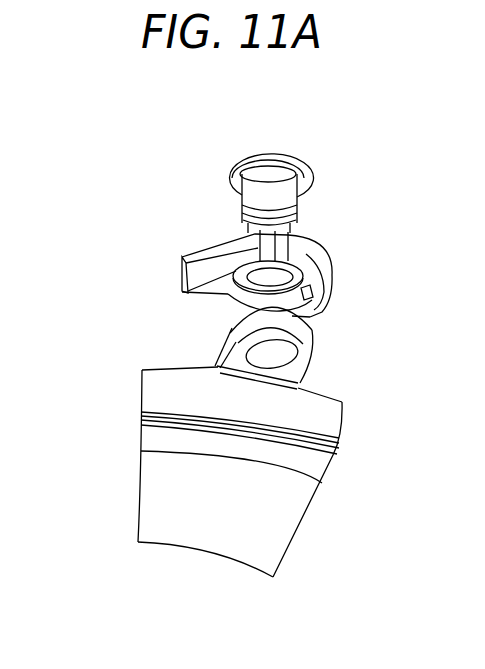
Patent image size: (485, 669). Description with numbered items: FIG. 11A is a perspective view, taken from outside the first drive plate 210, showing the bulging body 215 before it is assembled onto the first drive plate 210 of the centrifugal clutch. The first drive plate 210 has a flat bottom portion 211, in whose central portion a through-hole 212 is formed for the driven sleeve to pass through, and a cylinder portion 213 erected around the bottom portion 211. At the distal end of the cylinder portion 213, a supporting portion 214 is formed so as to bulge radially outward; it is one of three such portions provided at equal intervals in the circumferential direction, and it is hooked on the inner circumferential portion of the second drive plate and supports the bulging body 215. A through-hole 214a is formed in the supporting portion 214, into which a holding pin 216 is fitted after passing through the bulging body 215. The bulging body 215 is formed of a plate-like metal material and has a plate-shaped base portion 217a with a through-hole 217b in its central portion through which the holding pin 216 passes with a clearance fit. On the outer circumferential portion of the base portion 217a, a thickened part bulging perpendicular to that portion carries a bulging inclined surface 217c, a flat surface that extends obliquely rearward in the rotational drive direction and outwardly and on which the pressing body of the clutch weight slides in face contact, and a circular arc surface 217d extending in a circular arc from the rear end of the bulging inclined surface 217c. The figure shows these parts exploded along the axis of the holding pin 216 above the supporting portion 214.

The first drive plate 210 is at (343, 399).
The bottom portion 211 is at (173, 497).
The through-hole 212 is at (210, 550).
The cylinder portion 213 is at (163, 395).
The supporting portion 214 is at (303, 323).
The through-hole 214a is at (277, 350).
The bulging body 215 is at (322, 237).
The holding pin 216 is at (293, 152).
The base portion 217a is at (237, 297).
The through-hole 217b is at (236, 314).
The bulging inclined surface 217c is at (181, 272).
The circular arc surface 217d is at (326, 264).